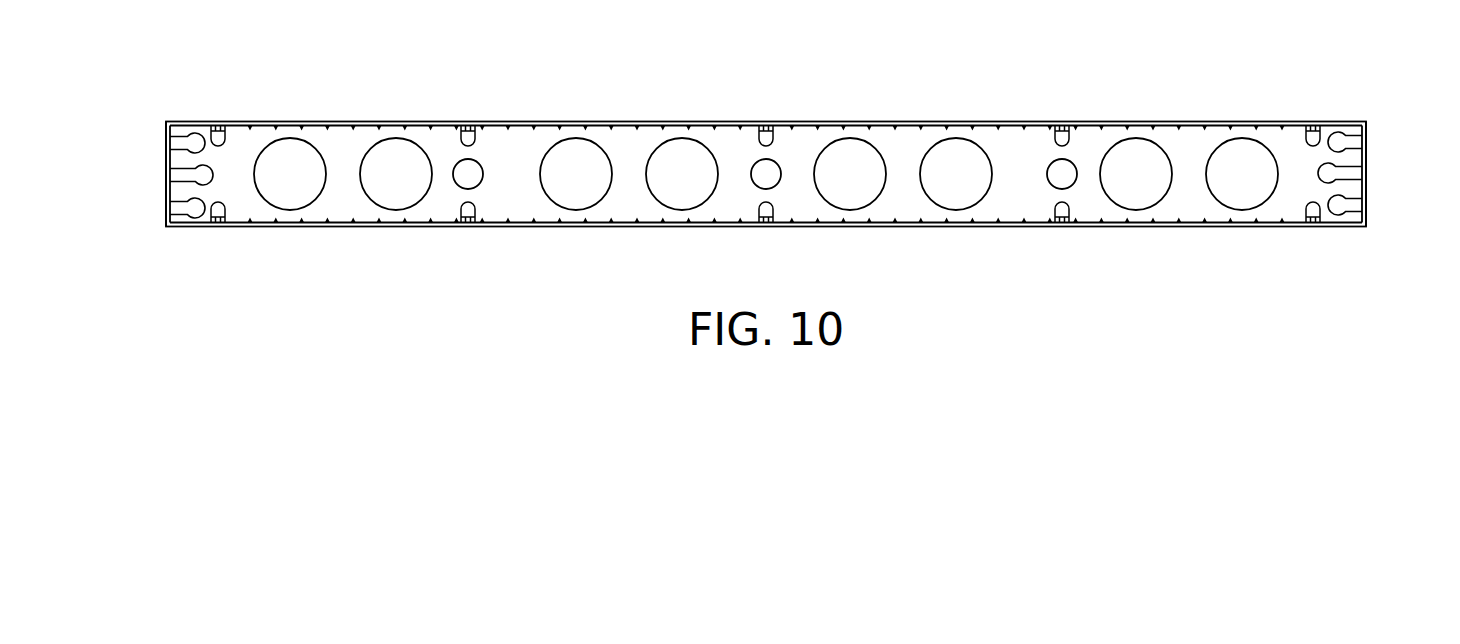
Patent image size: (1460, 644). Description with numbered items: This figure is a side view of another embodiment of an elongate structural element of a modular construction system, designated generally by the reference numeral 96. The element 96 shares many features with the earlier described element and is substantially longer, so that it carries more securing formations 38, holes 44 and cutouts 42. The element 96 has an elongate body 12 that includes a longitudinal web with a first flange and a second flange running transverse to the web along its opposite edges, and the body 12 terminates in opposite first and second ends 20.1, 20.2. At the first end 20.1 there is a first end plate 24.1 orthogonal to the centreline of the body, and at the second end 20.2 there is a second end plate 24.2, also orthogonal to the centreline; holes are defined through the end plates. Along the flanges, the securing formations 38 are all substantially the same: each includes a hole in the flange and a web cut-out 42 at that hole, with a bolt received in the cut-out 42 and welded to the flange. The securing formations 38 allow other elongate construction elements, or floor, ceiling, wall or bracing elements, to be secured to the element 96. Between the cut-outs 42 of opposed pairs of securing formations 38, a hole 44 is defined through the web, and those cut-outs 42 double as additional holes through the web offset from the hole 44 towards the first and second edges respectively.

The elongate structural element 96 is at (932, 80).
The elongate body 12 is at (596, 121).
The first end plate 24.1 is at (166, 158).
The second end plate 24.2 is at (1367, 153).
The first end 20.1 is at (168, 232).
The second end 20.2 is at (1362, 232).
The securing formations 38 is at (219, 120).
The web cut-out 42 is at (452, 143).
The fifth hole 44 is at (487, 161).